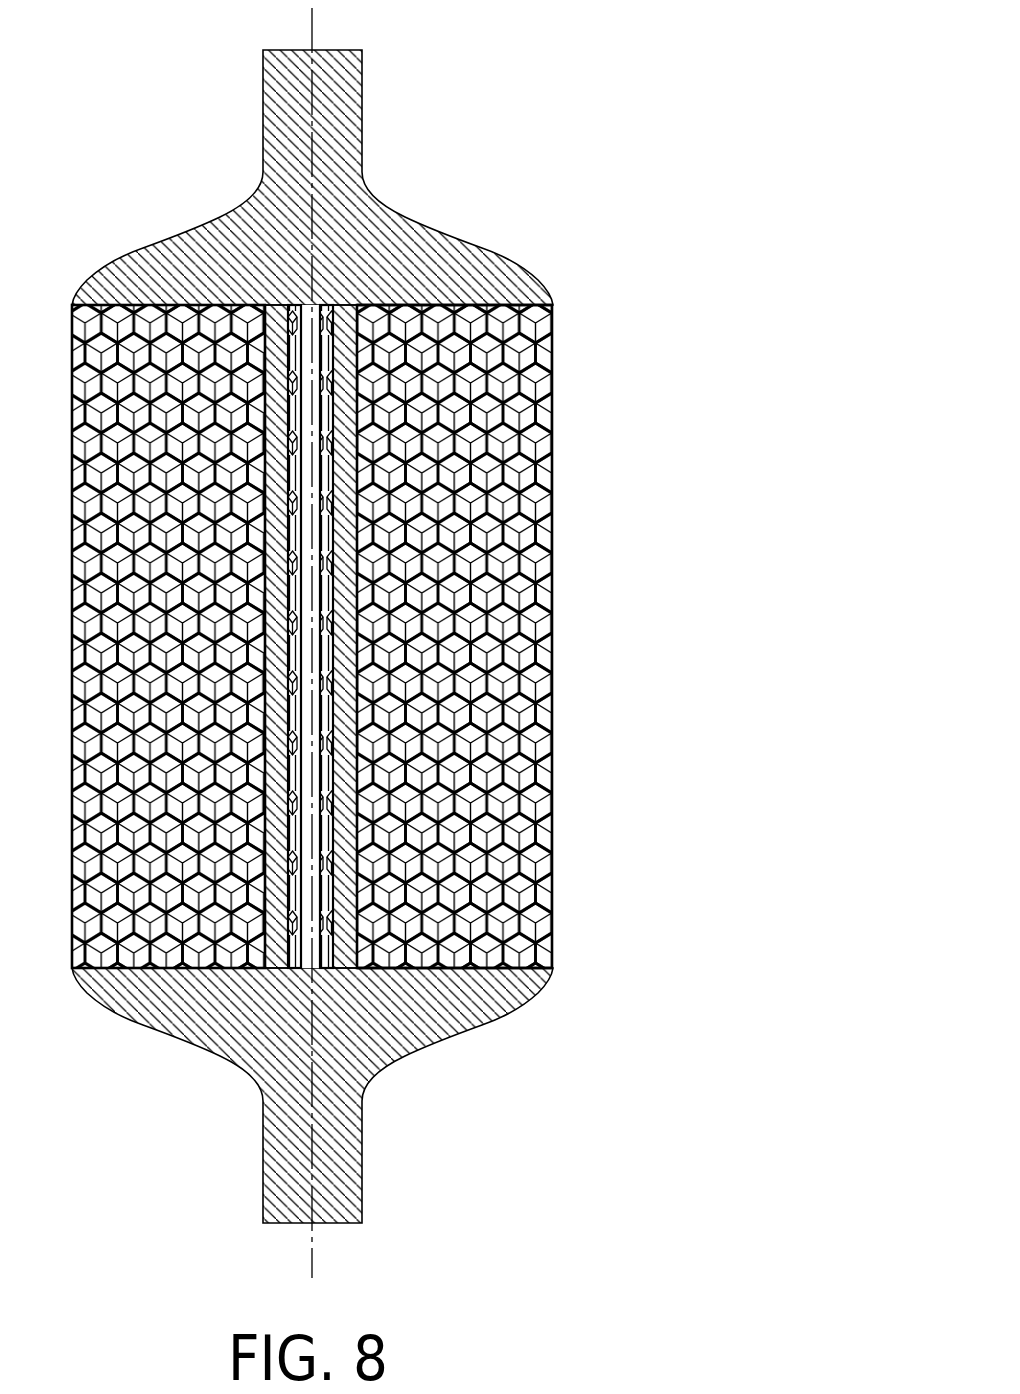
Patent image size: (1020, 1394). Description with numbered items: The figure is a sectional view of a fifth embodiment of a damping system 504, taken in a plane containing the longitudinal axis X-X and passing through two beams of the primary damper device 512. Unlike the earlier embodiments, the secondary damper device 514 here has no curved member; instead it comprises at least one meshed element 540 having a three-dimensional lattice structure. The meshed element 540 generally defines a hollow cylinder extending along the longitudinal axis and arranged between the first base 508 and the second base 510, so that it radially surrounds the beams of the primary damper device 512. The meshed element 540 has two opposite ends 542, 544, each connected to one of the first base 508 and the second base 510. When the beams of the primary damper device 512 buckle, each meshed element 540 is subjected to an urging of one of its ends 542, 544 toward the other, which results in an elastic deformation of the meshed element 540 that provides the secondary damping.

The damping system 504 is at (436, 643).
The first base 508 is at (483, 247).
The second base 510 is at (487, 1025).
The primary damper device 512 is at (472, 636).
The secondary damper device 514 is at (436, 622).
The meshed element 540 is at (558, 437).
The first end of the meshed element 542 is at (550, 325).
The second end of the meshed element 544 is at (528, 963).